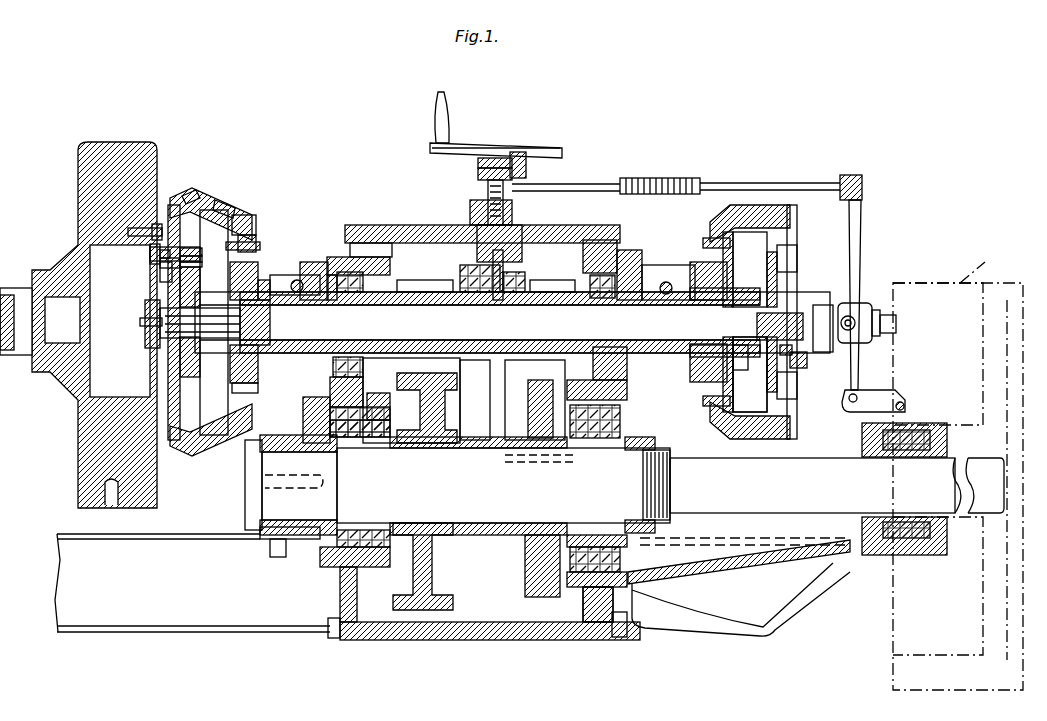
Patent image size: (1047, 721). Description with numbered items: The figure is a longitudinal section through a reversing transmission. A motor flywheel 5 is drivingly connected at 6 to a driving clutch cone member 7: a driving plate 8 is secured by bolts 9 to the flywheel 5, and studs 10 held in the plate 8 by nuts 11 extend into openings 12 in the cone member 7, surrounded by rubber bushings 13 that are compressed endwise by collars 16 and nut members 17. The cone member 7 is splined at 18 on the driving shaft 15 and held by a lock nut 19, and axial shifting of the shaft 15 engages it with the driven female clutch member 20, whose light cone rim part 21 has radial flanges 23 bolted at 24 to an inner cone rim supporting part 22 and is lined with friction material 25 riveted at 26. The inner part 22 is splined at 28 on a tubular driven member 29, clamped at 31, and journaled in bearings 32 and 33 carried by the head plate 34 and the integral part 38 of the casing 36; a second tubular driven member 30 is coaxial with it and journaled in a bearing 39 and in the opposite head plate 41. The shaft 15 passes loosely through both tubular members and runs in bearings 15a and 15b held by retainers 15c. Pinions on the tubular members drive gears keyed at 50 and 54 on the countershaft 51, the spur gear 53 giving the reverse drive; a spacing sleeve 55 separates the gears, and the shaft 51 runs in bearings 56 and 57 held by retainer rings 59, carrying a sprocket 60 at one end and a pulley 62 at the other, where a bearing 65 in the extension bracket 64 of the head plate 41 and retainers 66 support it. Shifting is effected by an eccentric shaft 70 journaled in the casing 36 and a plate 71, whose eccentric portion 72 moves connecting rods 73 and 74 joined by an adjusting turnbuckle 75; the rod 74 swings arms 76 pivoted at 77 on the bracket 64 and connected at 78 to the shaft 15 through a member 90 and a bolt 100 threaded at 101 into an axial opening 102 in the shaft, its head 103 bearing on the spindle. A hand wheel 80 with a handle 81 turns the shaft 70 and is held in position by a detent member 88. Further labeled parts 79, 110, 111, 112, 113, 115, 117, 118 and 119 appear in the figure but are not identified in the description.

The driving member 5 is at (110, 142).
The driving connection 6 is at (160, 258).
The driving clutch cone member 7 is at (205, 195).
The driving plate 8 is at (150, 226).
The bolts 9 is at (156, 224).
The studs 10 is at (165, 265).
The nuts 11 is at (150, 254).
The openings 12 is at (195, 300).
The bushings 13 is at (198, 252).
The driving shaft 15 is at (388, 322).
The bearing 15a is at (258, 318).
The bearing 15b is at (712, 318).
The retainers 15c is at (228, 323).
The collars 16 is at (202, 259).
The nut members 17 is at (202, 265).
The spline 18 is at (150, 335).
The lock nut 19 is at (145, 322).
The driven female clutch member 20 is at (262, 212).
The cone rim part 21 is at (246, 235).
The inner cone rim supporting part 22 is at (266, 282).
The radial flange 23 is at (258, 268).
The bolts 24 is at (258, 243).
The friction material 25 is at (188, 198).
The rivets 26 is at (224, 205).
The spline 28 is at (250, 370).
The tubular driven member 29 is at (297, 280).
The second tubular driven member 30 is at (645, 280).
The split clamp 31 is at (313, 262).
The bearing 32 is at (360, 312).
The bearing 33 is at (470, 278).
The head plate 34 is at (340, 600).
The casing 36 is at (390, 225).
The intermediate casing part 38 is at (460, 412).
The bearing 39 is at (522, 282).
The head plate 41 is at (613, 603).
The key 50 is at (418, 452).
The countershaft 51 is at (490, 515).
The spur gear 53 is at (530, 410).
The key 54 is at (535, 462).
The spacing sleeve 55 is at (478, 448).
The bearing 56 is at (340, 567).
The bearing 57 is at (603, 470).
The retainer rings 59 is at (627, 553).
The sprocket 60 is at (272, 545).
The pulley 62 is at (958, 466).
The extension bracket 64 is at (745, 580).
The bearing 65 is at (885, 555).
The bearing retainers 66 is at (862, 523).
The eccentric shaft 70 is at (478, 163).
The plate 71 is at (478, 175).
The eccentric portion 72 is at (488, 195).
The connecting rod 73 is at (588, 183).
The connecting rod 74 is at (768, 183).
The turnbuckle 75 is at (640, 178).
The arms 76 is at (860, 232).
The pivot 77 is at (842, 405).
The connection 78 is at (871, 302).
The clevis 79 is at (862, 188).
The hand wheel 80 is at (538, 135).
The handle 81 is at (440, 92).
The detent member 88 is at (526, 165).
The member 90 is at (826, 305).
The bolt 100 is at (808, 358).
The threaded engagement 101 is at (792, 357).
The threaded axial opening 102 is at (762, 360).
The head 103 is at (896, 325).
The bearing 110 is at (598, 285).
The bearing 111 is at (700, 275).
The clutch plate 112 is at (777, 285).
The clutch member 113 is at (750, 360).
The clutch cone 115 is at (730, 207).
The gear 117 is at (430, 280).
The gear 118 is at (560, 281).
The gear 119 is at (472, 380).